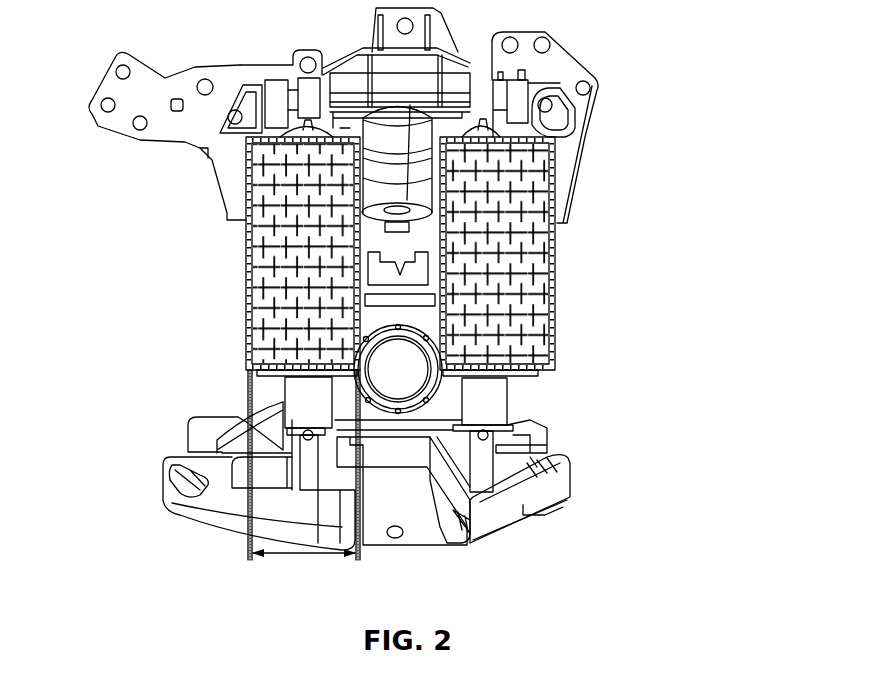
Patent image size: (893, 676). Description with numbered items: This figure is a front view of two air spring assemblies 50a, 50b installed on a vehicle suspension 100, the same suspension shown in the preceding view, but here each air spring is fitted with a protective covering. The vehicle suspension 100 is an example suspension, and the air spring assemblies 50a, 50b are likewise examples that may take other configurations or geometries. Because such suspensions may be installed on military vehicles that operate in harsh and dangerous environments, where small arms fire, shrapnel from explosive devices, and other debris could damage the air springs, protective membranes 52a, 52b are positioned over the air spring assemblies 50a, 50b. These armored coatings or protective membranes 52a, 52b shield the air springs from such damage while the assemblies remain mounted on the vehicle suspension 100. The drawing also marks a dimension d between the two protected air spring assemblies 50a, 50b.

The vehicle suspension 100 is at (397, 315).
The air spring assembly 50a is at (212, 256).
The air spring assembly 50b is at (584, 256).
The protective membrane 52a is at (293, 305).
The protective membrane 52b is at (517, 307).
The distance d is at (307, 557).